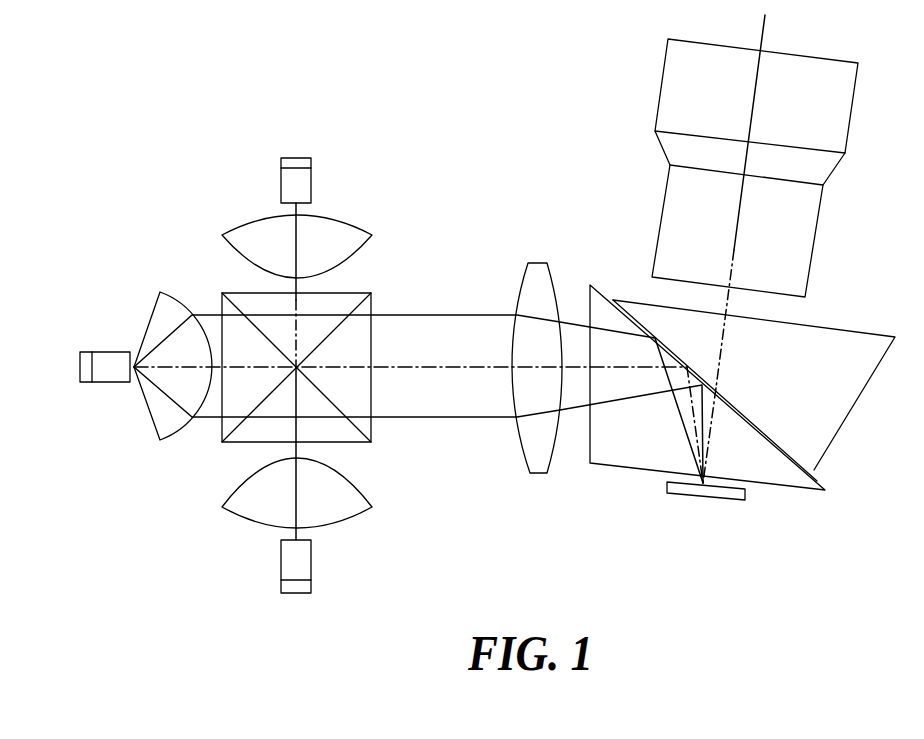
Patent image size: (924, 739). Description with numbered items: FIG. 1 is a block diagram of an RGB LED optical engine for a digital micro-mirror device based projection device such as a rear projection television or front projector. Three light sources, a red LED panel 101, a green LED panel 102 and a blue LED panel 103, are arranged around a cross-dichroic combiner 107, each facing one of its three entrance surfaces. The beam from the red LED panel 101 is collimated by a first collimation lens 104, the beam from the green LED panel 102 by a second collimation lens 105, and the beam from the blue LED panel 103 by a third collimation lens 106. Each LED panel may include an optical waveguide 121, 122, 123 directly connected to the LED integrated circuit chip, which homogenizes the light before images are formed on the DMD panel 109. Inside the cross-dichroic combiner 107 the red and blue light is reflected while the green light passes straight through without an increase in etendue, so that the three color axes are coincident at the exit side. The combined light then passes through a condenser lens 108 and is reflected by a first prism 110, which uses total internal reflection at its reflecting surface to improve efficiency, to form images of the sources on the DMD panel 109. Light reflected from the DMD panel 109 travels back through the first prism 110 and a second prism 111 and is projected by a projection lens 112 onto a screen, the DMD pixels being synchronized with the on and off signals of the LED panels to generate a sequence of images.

The red LED panel 101 is at (290, 157).
The optical waveguide 121 is at (312, 188).
The first collimation lens 104 is at (349, 231).
The cross-dichroic combiner 107 is at (350, 294).
The third collimation lens 106 is at (349, 489).
The optical waveguide 123 is at (289, 558).
The blue LED panel 103 is at (289, 585).
The second collimation lens 105 is at (166, 303).
The green LED panel 102 is at (84, 368).
The optical waveguide 122 is at (110, 355).
The condenser lens 108 is at (535, 262).
The first prism 110 is at (608, 452).
The second prism 111 is at (850, 335).
The DMD panel 109 is at (721, 502).
The projection lens 112 is at (672, 104).